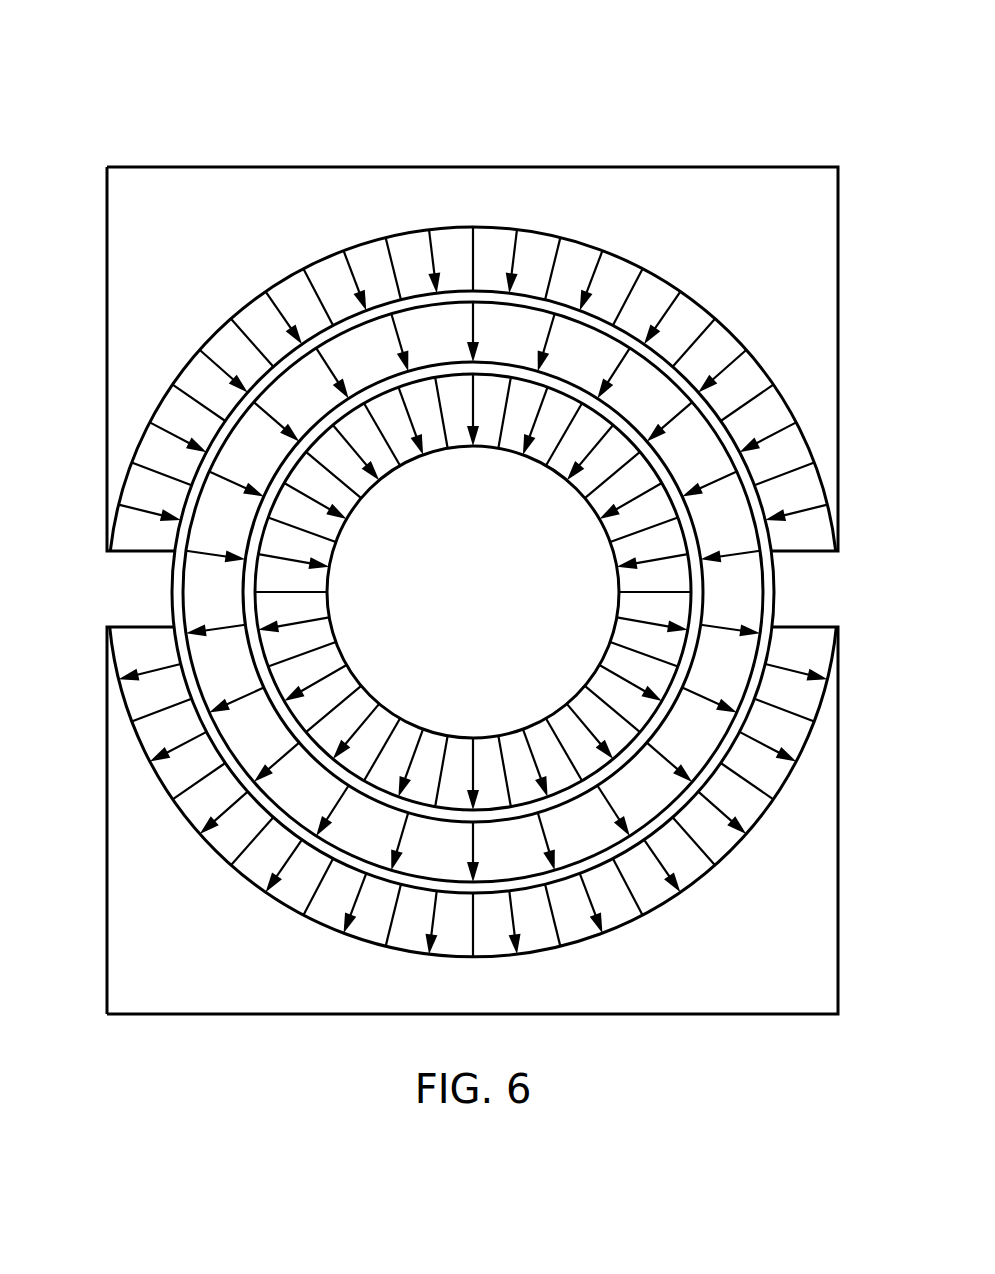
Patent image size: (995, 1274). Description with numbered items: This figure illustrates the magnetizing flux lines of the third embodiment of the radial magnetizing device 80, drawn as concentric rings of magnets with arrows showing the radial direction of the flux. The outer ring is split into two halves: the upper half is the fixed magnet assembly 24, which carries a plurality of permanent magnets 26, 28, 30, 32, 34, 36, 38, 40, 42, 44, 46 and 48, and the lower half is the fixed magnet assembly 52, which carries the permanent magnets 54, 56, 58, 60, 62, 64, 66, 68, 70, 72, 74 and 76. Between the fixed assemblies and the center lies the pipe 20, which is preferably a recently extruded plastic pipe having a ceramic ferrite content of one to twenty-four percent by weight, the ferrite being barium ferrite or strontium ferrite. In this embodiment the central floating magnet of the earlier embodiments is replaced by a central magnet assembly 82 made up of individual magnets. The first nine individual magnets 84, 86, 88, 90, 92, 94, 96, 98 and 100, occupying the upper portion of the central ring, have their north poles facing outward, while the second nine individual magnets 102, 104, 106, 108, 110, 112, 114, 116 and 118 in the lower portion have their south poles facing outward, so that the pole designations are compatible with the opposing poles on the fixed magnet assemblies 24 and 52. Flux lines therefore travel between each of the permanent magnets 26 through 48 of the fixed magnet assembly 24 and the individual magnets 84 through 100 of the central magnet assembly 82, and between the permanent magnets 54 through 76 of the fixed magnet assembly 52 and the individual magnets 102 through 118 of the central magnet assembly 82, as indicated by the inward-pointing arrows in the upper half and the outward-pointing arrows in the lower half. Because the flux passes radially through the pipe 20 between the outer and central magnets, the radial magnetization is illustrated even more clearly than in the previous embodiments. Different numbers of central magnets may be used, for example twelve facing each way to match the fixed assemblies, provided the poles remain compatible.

The pipe 20 is at (772, 578).
The fixed magnet assembly 24 is at (838, 367).
The permanent magnet 26 is at (118, 487).
The permanent magnet 28 is at (150, 410).
The permanent magnet 30 is at (210, 335).
The permanent magnet 32 is at (283, 275).
The permanent magnet 34 is at (362, 242).
The permanent magnet 36 is at (444, 228).
The permanent magnet 38 is at (533, 228).
The permanent magnet 40 is at (618, 246).
The permanent magnet 42 is at (690, 293).
The permanent magnet 44 is at (745, 343).
The permanent magnet 46 is at (818, 418).
The permanent magnet 48 is at (828, 500).
The fixed magnet assembly 52 is at (838, 787).
The permanent magnet 54 is at (110, 663).
The permanent magnet 56 is at (140, 748).
The permanent magnet 58 is at (218, 855).
The permanent magnet 60 is at (258, 888).
The permanent magnet 62 is at (347, 932).
The permanent magnet 64 is at (402, 953).
The permanent magnet 66 is at (505, 957).
The permanent magnet 68 is at (598, 938).
The permanent magnet 70 is at (678, 905).
The permanent magnet 72 is at (752, 846).
The permanent magnet 74 is at (782, 775).
The permanent magnet 76 is at (820, 678).
The radial magnetizing device 80 is at (532, 103).
The central magnet assembly 82 is at (458, 597).
The individual magnet 84 is at (330, 567).
The individual magnet 86 is at (348, 518).
The individual magnet 88 is at (378, 480).
The individual magnet 90 is at (420, 452).
The individual magnet 92 is at (473, 446).
The individual magnet 94 is at (525, 450).
The individual magnet 96 is at (567, 478).
The individual magnet 98 is at (603, 527).
The individual magnet 100 is at (622, 565).
The individual magnet 102 is at (622, 622).
The individual magnet 104 is at (597, 662).
The individual magnet 106 is at (570, 707).
The individual magnet 108 is at (520, 730).
The individual magnet 110 is at (472, 737).
The individual magnet 112 is at (423, 728).
The individual magnet 114 is at (380, 703).
The individual magnet 116 is at (347, 663).
The individual magnet 118 is at (330, 617).